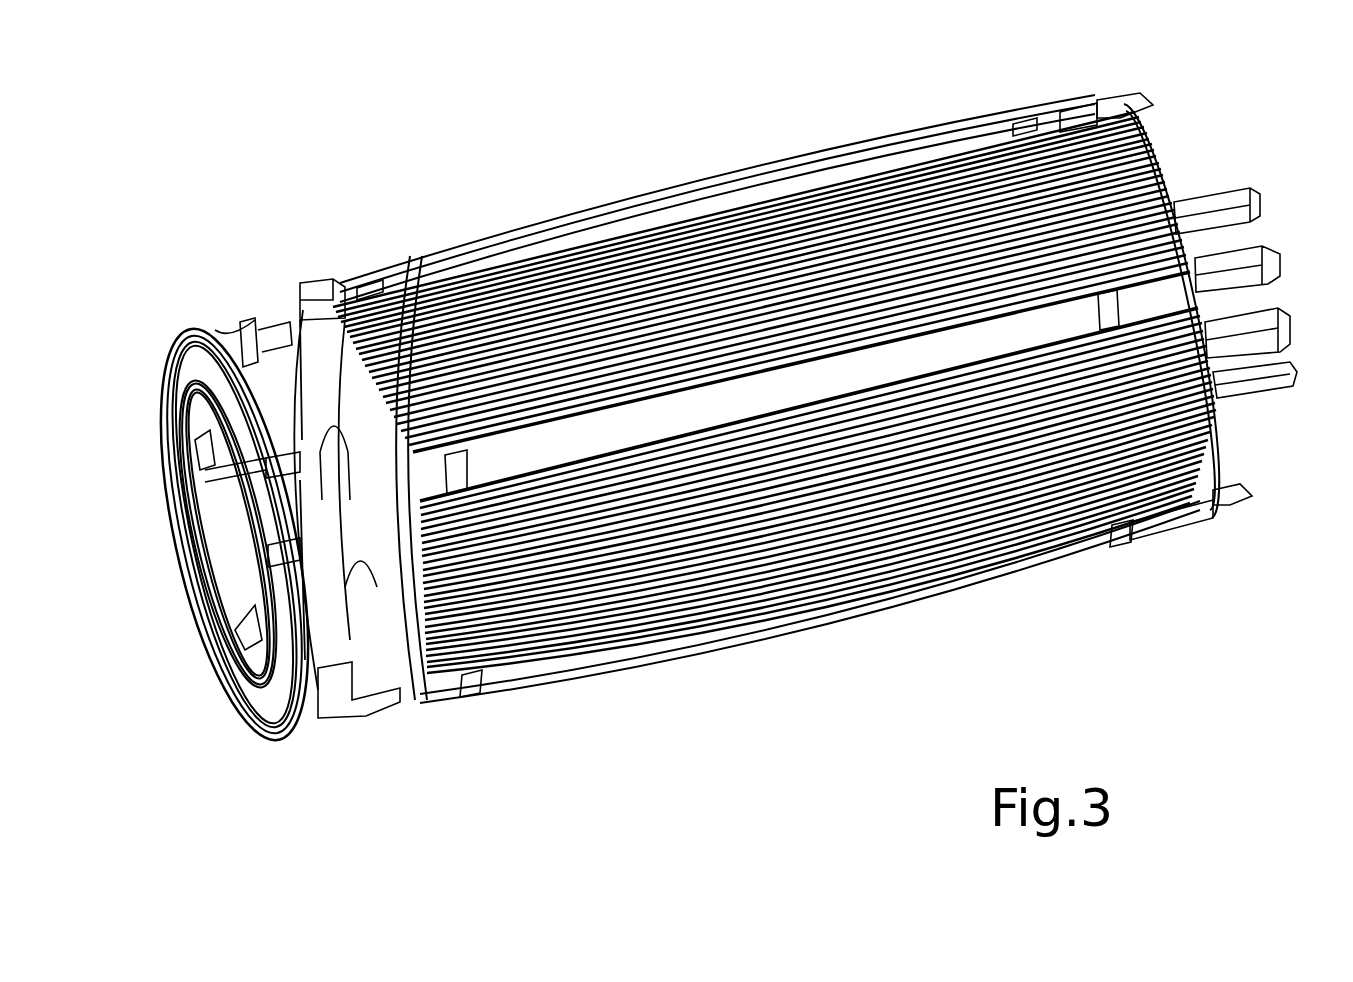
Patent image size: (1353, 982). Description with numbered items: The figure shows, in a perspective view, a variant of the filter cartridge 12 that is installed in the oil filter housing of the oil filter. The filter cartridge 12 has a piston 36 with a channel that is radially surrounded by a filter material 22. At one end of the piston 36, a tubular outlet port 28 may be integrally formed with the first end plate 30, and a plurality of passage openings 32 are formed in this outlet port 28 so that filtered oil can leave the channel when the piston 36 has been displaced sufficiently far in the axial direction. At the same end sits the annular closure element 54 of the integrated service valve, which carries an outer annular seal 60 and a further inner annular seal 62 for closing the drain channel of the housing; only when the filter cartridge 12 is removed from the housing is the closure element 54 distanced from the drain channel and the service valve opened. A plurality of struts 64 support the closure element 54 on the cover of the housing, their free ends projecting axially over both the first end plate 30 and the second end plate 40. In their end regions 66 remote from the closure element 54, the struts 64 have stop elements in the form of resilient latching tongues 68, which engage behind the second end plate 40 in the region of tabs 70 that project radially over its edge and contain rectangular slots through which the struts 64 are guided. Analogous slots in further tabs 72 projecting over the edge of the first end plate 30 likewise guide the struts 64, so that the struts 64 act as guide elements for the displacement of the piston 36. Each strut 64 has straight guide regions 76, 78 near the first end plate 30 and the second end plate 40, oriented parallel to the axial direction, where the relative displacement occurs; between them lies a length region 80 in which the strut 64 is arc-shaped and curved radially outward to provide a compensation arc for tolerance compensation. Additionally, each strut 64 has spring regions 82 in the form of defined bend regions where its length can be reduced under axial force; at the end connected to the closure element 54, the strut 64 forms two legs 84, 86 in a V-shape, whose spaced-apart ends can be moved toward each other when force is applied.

The filter cartridge 12 is at (305, 172).
The filter material 22 is at (640, 250).
The tubular outlet port 28 is at (345, 590).
The first end plate 30 is at (312, 350).
The passage openings 32 is at (200, 468).
The piston 36 is at (1003, 522).
The second end plate 40 is at (1148, 140).
The closure element 54 is at (180, 368).
The outer seal 60 is at (190, 335).
The inner seal 62 is at (200, 484).
The struts 64 is at (692, 160).
The end regions 66 is at (1245, 262).
The latching tongues 68 is at (1212, 198).
The tabs 70 is at (1110, 92).
The further tabs 72 is at (318, 292).
The first guide region 76 is at (305, 300).
The second guide region 78 is at (1060, 110).
The length region 80 is at (780, 162).
The spring regions 82 is at (258, 352).
The first leg 84 is at (215, 322).
The second leg 86 is at (185, 455).